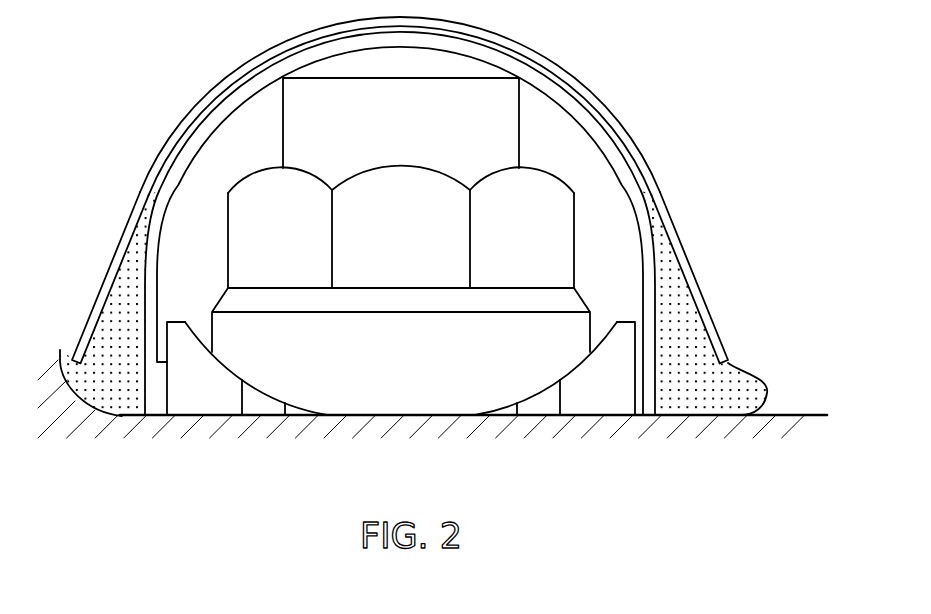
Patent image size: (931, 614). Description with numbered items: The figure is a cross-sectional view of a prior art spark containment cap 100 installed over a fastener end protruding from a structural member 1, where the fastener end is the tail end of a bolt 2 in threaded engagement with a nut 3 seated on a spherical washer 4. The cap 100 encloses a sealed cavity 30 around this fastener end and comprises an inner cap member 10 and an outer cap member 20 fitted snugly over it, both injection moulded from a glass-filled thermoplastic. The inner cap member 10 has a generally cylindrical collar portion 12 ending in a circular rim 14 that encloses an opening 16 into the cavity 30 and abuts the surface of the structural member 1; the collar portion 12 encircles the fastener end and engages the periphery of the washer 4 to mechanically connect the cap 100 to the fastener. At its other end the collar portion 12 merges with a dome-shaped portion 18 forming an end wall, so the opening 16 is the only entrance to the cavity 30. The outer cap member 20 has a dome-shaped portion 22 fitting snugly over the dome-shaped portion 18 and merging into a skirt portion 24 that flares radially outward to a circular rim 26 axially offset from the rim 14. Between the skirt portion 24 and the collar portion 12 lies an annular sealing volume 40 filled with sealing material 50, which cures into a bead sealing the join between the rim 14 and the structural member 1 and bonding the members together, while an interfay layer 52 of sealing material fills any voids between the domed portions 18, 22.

The spark containment cap 100 is at (431, 250).
The inner cap member 10 is at (253, 67).
The collar portion 12 is at (650, 315).
The circular rim 14 is at (650, 417).
The opening 16 is at (168, 402).
The dome-shaped portion 18 is at (607, 128).
The outer cap member 20 is at (193, 110).
The dome-shaped portion 22 is at (547, 62).
The skirt portion 24 is at (697, 262).
The circular rim 26 is at (733, 365).
The cavity 30 is at (261, 160).
The annular sealing volume 40 is at (115, 330).
The sealing material 50 is at (712, 391).
The interfay layer 52 is at (638, 155).
The structural member 1 is at (797, 415).
The bolt 2 is at (507, 103).
The nut 3 is at (555, 245).
The spherical washer 4 is at (590, 393).